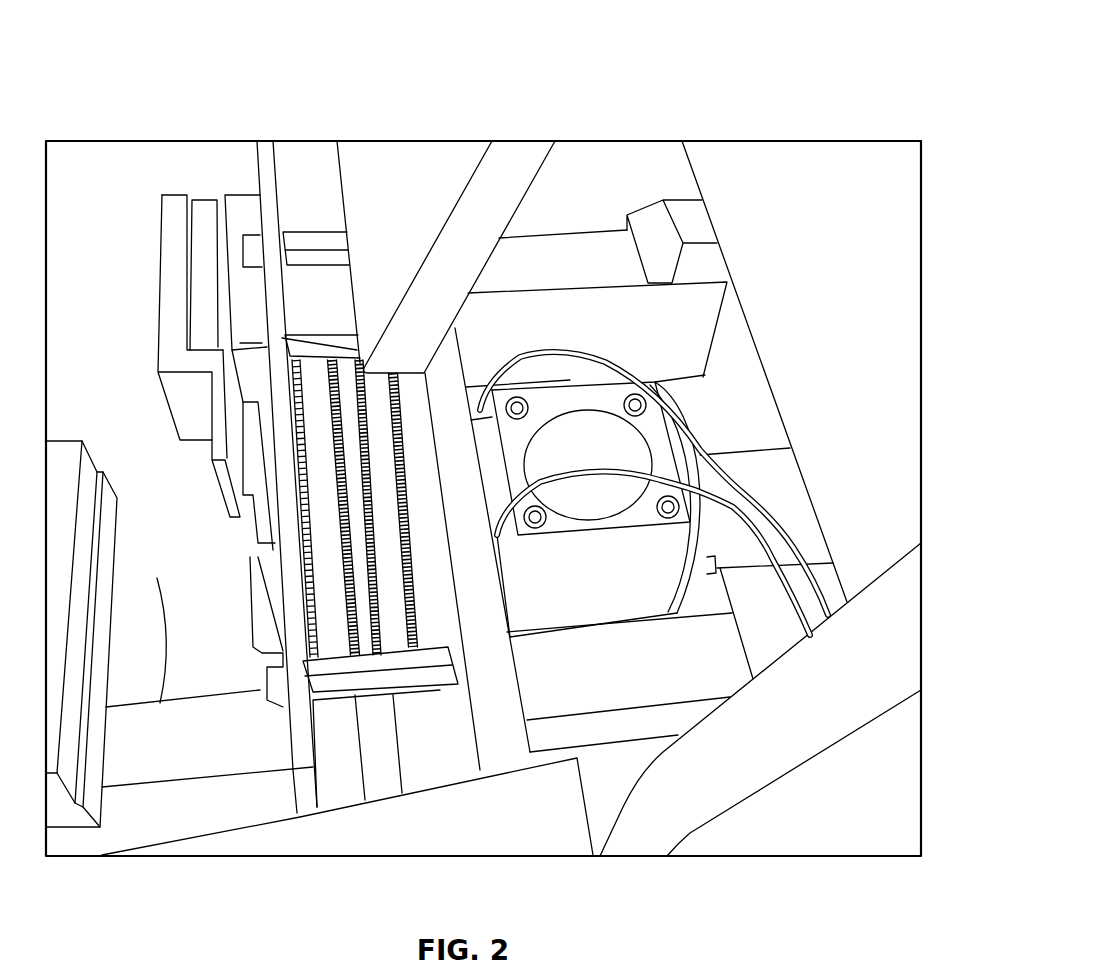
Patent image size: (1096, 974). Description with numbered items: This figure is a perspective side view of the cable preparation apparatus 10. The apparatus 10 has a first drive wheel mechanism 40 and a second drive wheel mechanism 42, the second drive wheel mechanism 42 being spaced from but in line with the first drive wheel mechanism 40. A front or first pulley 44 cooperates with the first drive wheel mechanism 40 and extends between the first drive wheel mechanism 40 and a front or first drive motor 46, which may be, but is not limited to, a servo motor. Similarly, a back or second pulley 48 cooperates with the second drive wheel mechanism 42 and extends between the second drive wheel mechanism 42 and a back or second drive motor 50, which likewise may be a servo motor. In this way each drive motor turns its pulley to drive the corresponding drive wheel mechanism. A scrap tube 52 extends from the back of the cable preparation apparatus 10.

The cable preparation apparatus 10 is at (533, 98).
The first drive wheel mechanism 40 is at (313, 647).
The second drive wheel mechanism 42 is at (420, 607).
The first pulley 44 is at (320, 378).
The first drive motor 46 is at (673, 672).
The second pulley 48 is at (385, 400).
The second drive motor 50 is at (592, 252).
The scrap tube 52 is at (670, 547).